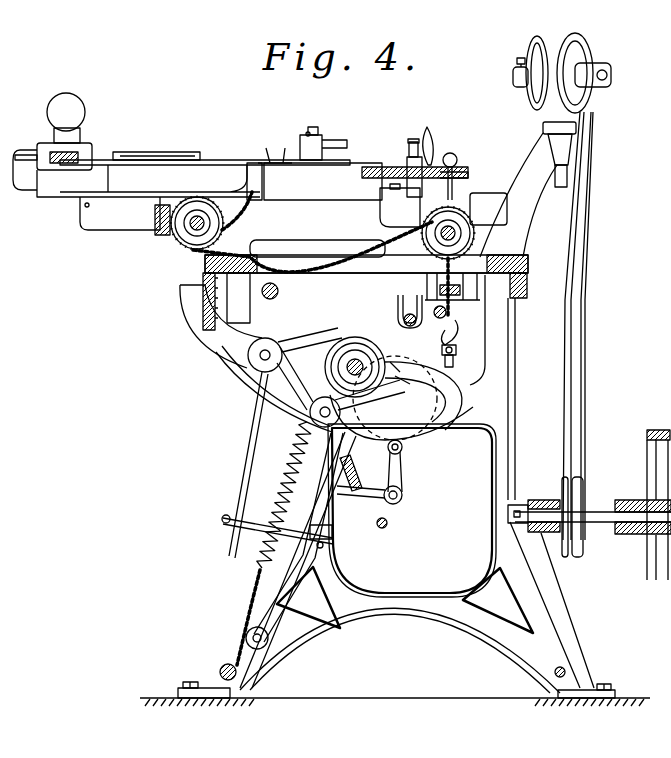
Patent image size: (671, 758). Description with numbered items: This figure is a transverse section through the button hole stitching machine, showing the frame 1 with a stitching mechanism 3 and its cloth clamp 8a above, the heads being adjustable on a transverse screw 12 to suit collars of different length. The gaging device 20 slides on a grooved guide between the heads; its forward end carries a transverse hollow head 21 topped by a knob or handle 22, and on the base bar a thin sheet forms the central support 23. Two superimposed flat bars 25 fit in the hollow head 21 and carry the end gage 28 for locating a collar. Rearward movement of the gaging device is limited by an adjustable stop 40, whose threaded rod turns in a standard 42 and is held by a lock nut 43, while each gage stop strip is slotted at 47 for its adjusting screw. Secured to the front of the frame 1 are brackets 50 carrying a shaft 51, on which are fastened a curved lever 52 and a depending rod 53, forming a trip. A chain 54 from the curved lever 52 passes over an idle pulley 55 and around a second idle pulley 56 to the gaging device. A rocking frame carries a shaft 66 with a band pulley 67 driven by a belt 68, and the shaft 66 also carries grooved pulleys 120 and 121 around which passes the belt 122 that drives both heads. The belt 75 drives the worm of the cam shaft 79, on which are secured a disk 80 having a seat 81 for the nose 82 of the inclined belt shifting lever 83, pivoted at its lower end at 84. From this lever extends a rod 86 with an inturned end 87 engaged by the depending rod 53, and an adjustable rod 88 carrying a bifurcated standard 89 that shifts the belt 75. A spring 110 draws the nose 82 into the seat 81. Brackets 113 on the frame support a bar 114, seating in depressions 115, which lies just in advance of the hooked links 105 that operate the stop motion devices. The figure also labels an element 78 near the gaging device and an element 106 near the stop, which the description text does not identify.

The frame 1 is at (200, 274).
The stitching mechanism 3 is at (323, 144).
The cloth clamp 8a is at (323, 181).
The transverse screw 12 is at (270, 300).
The gaging device 20 is at (241, 160).
The transverse hollow head 21 is at (80, 150).
The knob or handle 22 is at (75, 113).
The central support 23 is at (241, 160).
The superimposed flat bars 25 is at (68, 155).
The end gage 28 is at (156, 143).
The adjustable stop 40 is at (380, 176).
The standard 42 is at (407, 160).
The lock nut 43 is at (436, 140).
The slot 47 is at (468, 175).
The brackets 50 is at (178, 333).
The shaft 51 is at (272, 348).
The curved lever 52 is at (348, 350).
The depending rod 53 is at (244, 440).
The chain 54 is at (290, 275).
The idle pulley 55 is at (462, 212).
The second idle pulley 56 is at (177, 242).
The shaft 66 is at (600, 512).
The band pulley 67 is at (647, 457).
The belt 68 is at (655, 425).
The belt 75 is at (403, 448).
The bar 78 is at (317, 233).
The cam shaft 79 is at (258, 200).
The disk 80 is at (378, 360).
The seat 81 is at (400, 368).
The nose 82 is at (400, 378).
The belt shifting lever 83 is at (330, 508).
The pivot 84 is at (246, 636).
The rod 86 is at (258, 528).
The inturned end 87 is at (224, 523).
The adjustable rod 88 is at (403, 488).
The bifurcated standard 89 is at (392, 486).
The hooked links 105 is at (470, 344).
The pin 106 is at (458, 160).
The spring 110 is at (288, 482).
The brackets 113 is at (470, 295).
The bar 114 is at (428, 290).
The depressions 115 is at (470, 325).
The grooved pulley 120 is at (583, 545).
The grooved pulley 121 is at (565, 557).
The belt 122 is at (586, 290).